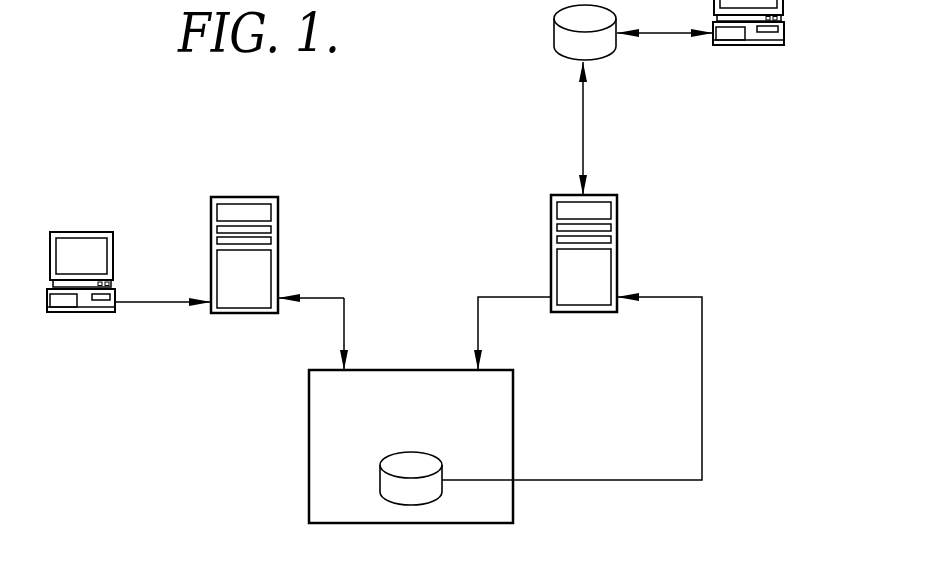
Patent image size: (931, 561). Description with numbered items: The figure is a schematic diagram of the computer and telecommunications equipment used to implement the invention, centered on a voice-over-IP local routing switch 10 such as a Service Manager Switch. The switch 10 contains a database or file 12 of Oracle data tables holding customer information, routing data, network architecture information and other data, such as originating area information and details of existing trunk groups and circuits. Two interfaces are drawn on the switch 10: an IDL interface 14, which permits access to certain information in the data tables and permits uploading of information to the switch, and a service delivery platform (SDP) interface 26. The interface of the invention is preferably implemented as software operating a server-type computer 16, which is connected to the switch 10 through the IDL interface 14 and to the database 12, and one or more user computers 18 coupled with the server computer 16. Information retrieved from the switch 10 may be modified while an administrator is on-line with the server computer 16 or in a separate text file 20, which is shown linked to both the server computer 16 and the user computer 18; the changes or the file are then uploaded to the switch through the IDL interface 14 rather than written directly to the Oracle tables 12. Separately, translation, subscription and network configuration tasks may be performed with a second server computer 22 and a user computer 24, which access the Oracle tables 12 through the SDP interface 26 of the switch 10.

The voice-over-i.p. local routing switch 10 is at (309, 446).
The database 12 is at (411, 497).
The IDL interface 14 is at (478, 367).
The server-type computer 16 is at (617, 237).
The user computer 18 is at (745, 45).
The text file 20 is at (560, 42).
The server computer 22 is at (278, 222).
The user computer 24 is at (80, 307).
The service delivery platform (SDP) interface 26 is at (343, 366).